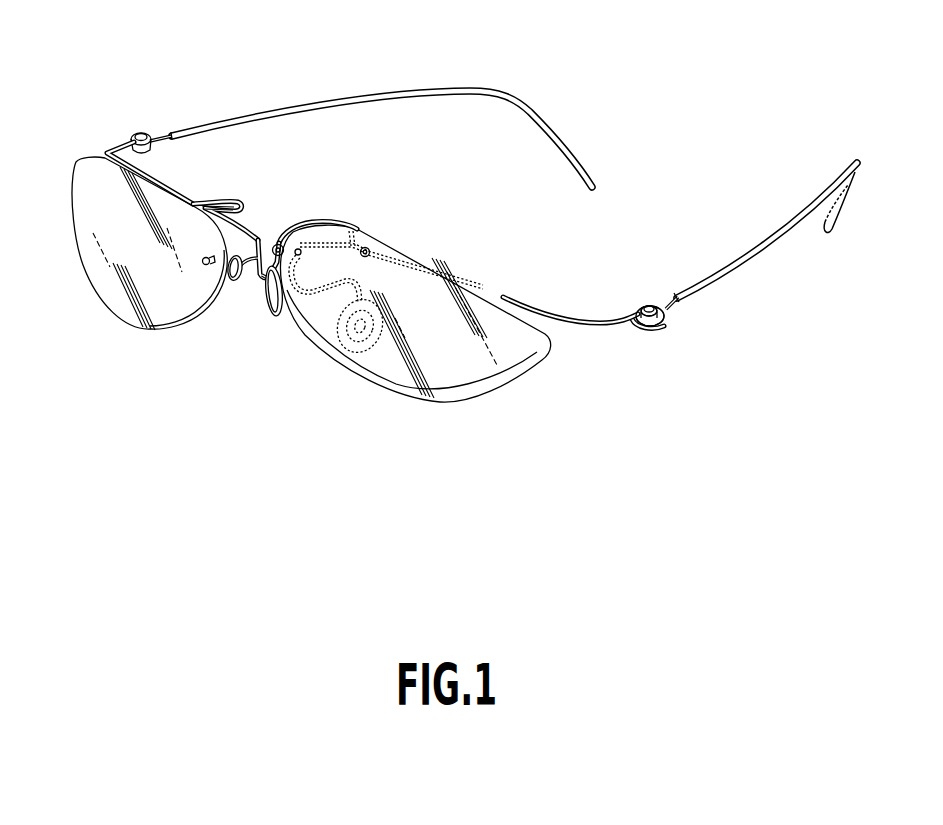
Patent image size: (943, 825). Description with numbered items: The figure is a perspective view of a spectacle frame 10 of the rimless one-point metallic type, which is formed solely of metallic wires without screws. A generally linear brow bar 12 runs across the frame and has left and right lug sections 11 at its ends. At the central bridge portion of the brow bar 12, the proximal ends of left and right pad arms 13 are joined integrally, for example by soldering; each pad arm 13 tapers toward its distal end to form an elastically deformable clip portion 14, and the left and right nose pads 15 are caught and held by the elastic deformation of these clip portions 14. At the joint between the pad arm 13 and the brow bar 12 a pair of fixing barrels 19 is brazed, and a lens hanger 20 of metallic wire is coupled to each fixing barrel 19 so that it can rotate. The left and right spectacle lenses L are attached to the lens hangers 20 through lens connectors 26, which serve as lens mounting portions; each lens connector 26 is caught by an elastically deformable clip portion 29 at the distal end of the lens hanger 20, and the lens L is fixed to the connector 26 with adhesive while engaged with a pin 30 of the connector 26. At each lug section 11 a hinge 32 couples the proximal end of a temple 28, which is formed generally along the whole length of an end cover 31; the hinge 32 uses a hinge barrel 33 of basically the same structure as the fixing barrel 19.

The spectacle frame 10 is at (645, 438).
The lug section 11 is at (107, 151).
The brow bar 12 is at (548, 302).
The pad arm 13 is at (261, 236).
The clip portion 14 is at (350, 352).
The nose pad 15 is at (273, 316).
The fixing barrel 19 is at (231, 200).
The lens hanger 20 is at (212, 200).
The lens connector 26 is at (238, 282).
The temple 28 is at (393, 77).
The clip portion 29 is at (282, 244).
The pin 30 is at (204, 259).
The end cover 31 is at (460, 96).
The hinge 32 is at (141, 129).
The hinge barrel 33 is at (650, 303).
The spectacle lens L is at (118, 303).